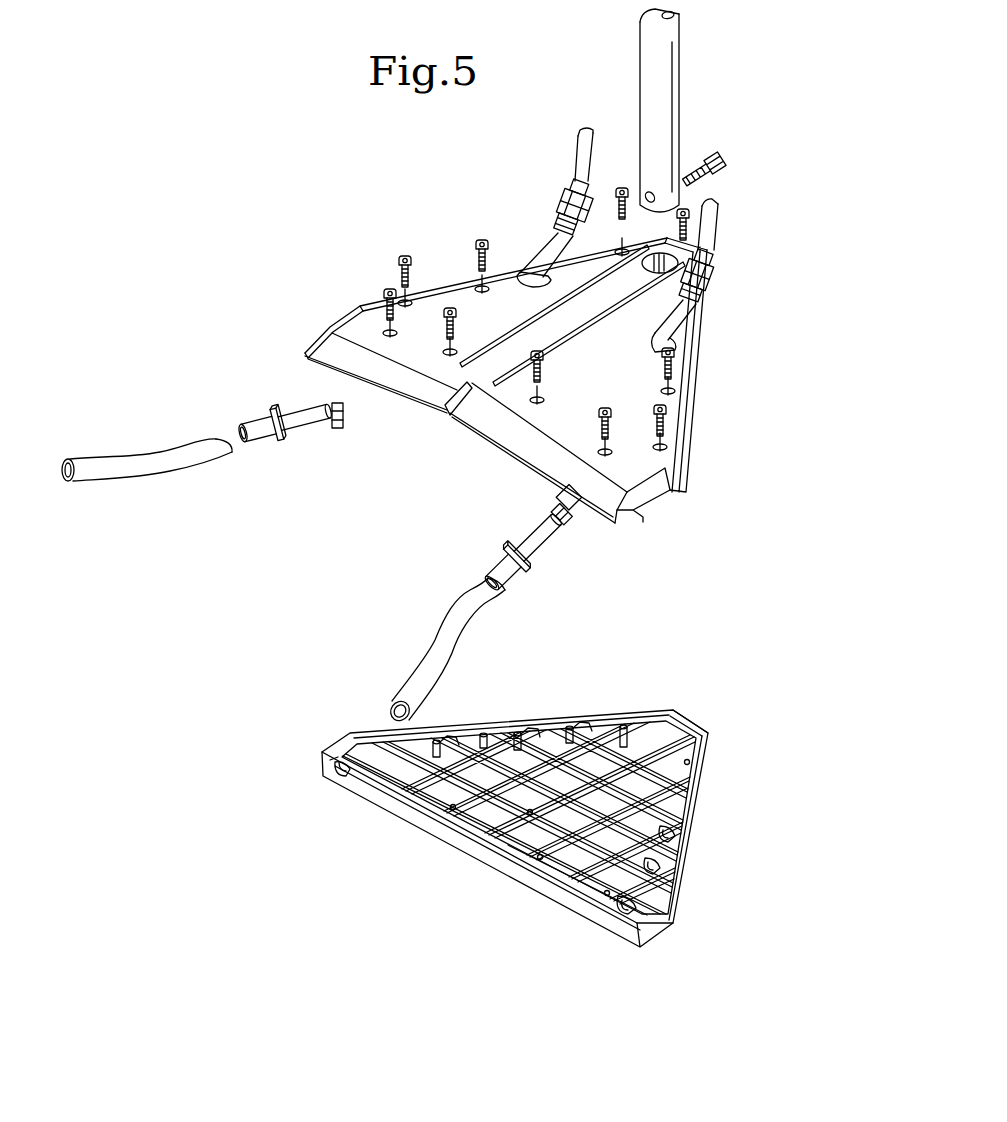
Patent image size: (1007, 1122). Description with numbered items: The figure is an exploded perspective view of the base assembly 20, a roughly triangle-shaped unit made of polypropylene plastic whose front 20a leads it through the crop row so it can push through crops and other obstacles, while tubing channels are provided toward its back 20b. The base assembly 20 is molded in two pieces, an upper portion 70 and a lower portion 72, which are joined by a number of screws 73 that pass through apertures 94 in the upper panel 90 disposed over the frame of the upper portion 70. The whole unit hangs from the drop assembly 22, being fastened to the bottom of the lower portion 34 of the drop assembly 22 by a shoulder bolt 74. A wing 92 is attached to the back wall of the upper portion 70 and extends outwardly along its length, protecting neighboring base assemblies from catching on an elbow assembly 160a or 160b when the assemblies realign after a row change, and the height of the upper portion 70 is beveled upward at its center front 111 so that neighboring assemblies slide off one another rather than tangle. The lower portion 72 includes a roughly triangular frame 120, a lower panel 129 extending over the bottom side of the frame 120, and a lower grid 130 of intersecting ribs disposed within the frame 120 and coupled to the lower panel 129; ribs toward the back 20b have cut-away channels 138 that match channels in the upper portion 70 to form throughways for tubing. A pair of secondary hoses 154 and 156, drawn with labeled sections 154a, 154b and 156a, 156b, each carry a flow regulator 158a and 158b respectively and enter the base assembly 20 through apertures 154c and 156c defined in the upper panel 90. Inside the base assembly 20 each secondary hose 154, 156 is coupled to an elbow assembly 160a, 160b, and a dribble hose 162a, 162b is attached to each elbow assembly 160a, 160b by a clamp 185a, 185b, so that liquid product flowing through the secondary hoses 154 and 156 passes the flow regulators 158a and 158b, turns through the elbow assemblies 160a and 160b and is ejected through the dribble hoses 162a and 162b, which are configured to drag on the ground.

The base assembly 20 is at (305, 200).
The front of the base assembly 20a is at (693, 213).
The back of the base assembly 20b is at (447, 853).
The drop assembly 22 is at (683, 58).
The lower portion of the drop assembly 34 is at (678, 120).
The upper portion 70 is at (700, 367).
The lower portion 72 is at (738, 787).
The screws 73 is at (663, 423).
The shoulder bolt 74 is at (722, 157).
The upper panel 90 is at (460, 288).
The wing 92 is at (485, 430).
The apertures 94 is at (600, 443).
The center front 111 is at (613, 278).
The frame 120 is at (535, 721).
The lower panel 129 is at (338, 787).
The lower grid 130 is at (637, 733).
The channels 138 is at (683, 880).
The secondary hose 154 is at (577, 141).
The first hose upper section 154a is at (578, 158).
The first hose lower section 154b is at (551, 248).
The aperture 154c is at (525, 275).
The secondary hose 156 is at (718, 206).
The second hose upper section 156a is at (716, 230).
The second hose lower section 156b is at (680, 317).
The aperture 156c is at (653, 330).
The flow regulator 158a is at (560, 196).
The flow regulator 158b is at (720, 274).
The elbow assembly 160a is at (270, 403).
The elbow assembly 160b is at (535, 582).
The dribble hose 162a is at (108, 473).
The dribble hose 162b is at (400, 687).
The clamp 185a is at (339, 428).
The clamp 185b is at (550, 505).